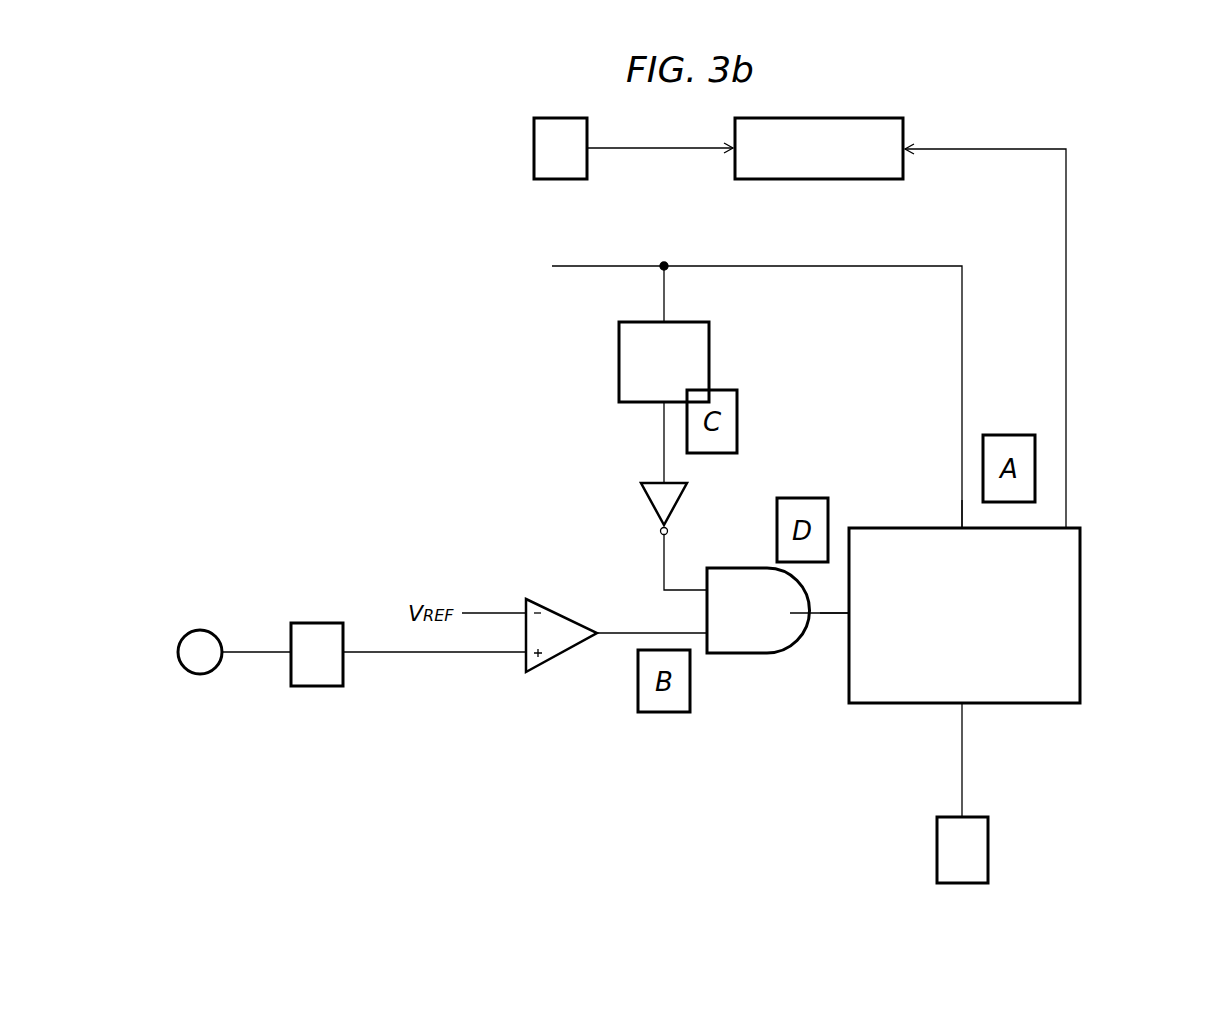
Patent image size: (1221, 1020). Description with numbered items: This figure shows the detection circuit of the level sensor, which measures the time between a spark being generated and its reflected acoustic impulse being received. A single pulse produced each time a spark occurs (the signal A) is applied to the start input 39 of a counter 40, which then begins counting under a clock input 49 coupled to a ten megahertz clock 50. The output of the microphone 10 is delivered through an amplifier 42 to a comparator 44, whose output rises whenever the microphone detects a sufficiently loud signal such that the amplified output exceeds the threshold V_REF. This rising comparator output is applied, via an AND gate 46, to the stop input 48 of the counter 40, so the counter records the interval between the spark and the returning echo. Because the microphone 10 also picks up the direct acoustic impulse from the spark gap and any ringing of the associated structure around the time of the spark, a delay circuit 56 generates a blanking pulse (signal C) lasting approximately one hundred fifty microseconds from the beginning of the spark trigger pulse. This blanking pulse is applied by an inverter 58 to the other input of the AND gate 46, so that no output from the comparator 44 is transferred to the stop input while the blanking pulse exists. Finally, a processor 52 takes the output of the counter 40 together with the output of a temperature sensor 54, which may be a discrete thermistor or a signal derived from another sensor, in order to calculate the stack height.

The microphone 10 is at (200, 629).
The start input 39 is at (958, 527).
The counter 40 is at (1081, 615).
The amplifier 42 is at (316, 622).
The comparator 44 is at (548, 604).
The AND gate 46 is at (705, 601).
The stop input 48 is at (845, 620).
The clock input 49 is at (958, 707).
The 10 MHz clock 50 is at (936, 844).
The processor 52 is at (812, 181).
The temperature sensor 54 is at (533, 146).
The delay circuit 56 is at (618, 356).
The inverter 58 is at (649, 500).